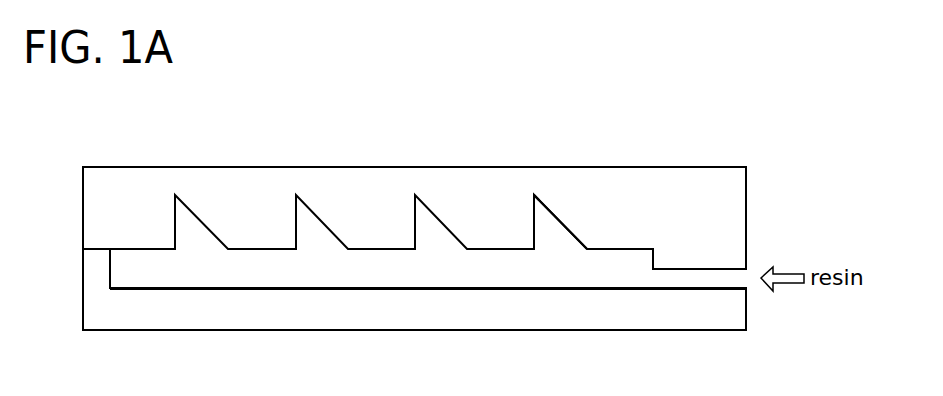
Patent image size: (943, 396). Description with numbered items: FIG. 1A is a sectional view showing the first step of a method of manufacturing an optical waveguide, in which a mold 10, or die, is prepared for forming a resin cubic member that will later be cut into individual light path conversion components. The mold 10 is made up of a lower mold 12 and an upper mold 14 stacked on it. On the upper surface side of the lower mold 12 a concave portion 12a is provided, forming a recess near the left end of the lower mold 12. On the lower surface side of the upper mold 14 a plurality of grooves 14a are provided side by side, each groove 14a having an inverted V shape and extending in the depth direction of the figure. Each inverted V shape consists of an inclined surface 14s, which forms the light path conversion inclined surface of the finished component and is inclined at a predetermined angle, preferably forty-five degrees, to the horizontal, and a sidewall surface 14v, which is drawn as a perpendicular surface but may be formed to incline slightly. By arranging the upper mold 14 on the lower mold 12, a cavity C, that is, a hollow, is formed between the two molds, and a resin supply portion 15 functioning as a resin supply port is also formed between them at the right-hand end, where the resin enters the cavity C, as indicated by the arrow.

The mold 10 is at (414, 198).
The lower mold 12 is at (590, 312).
The concave portion 12a is at (110, 268).
The upper mold 14 is at (588, 183).
The sidewall surface 14v is at (532, 228).
The groove 14a is at (533, 195).
The inclined surface 14s is at (563, 218).
The resin supply portion 15 is at (713, 269).
The cavity C is at (438, 263).